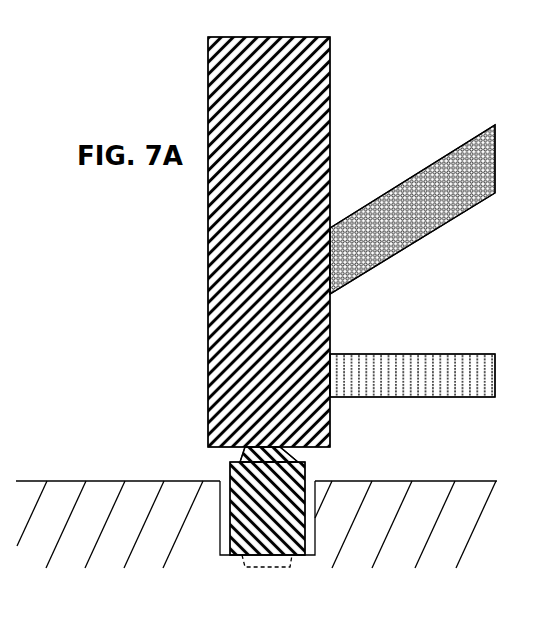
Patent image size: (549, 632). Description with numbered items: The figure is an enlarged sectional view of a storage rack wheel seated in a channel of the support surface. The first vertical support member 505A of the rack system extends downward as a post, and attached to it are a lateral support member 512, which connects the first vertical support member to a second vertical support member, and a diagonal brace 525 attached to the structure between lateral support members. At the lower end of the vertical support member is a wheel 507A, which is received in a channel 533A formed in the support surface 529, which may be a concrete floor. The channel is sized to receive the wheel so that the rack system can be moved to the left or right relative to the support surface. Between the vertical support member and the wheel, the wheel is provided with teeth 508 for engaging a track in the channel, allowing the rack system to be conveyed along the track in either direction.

The first vertical support member 505A is at (243, 325).
The diagonal brace 525 is at (430, 183).
The lateral support member 512 is at (448, 377).
The teeth 508 is at (292, 456).
The wheel 507A is at (243, 519).
The channel 533A is at (222, 514).
The support surface 529 is at (108, 481).